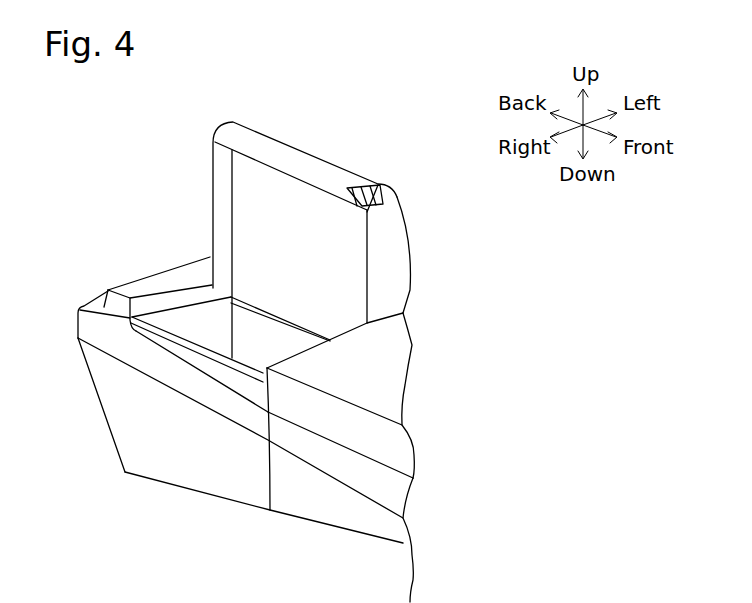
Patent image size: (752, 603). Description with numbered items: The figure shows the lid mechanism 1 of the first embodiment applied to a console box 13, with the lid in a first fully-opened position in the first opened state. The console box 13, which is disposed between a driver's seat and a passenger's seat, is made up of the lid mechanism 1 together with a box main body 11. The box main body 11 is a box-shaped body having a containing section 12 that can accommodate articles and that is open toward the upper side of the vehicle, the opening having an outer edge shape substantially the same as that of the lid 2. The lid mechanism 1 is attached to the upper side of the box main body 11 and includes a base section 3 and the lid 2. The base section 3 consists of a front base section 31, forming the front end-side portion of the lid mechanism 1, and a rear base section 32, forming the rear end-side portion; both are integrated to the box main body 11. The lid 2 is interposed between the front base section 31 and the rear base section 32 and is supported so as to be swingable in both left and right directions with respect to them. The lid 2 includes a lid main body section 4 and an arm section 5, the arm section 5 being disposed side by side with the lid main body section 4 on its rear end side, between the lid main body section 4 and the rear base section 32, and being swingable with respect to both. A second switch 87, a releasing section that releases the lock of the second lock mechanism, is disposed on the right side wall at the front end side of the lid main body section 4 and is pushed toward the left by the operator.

The lid mechanism 1 is at (321, 230).
The lid 2 is at (255, 134).
The base section 3 is at (278, 360).
The lid main body section 4 is at (331, 246).
The arm section 5 is at (220, 172).
The second switch 87 is at (368, 185).
The box main body 11 is at (123, 412).
The containing section 12 is at (213, 332).
The console box 13 is at (250, 404).
The front base section 31 is at (393, 367).
The rear base section 32 is at (158, 277).